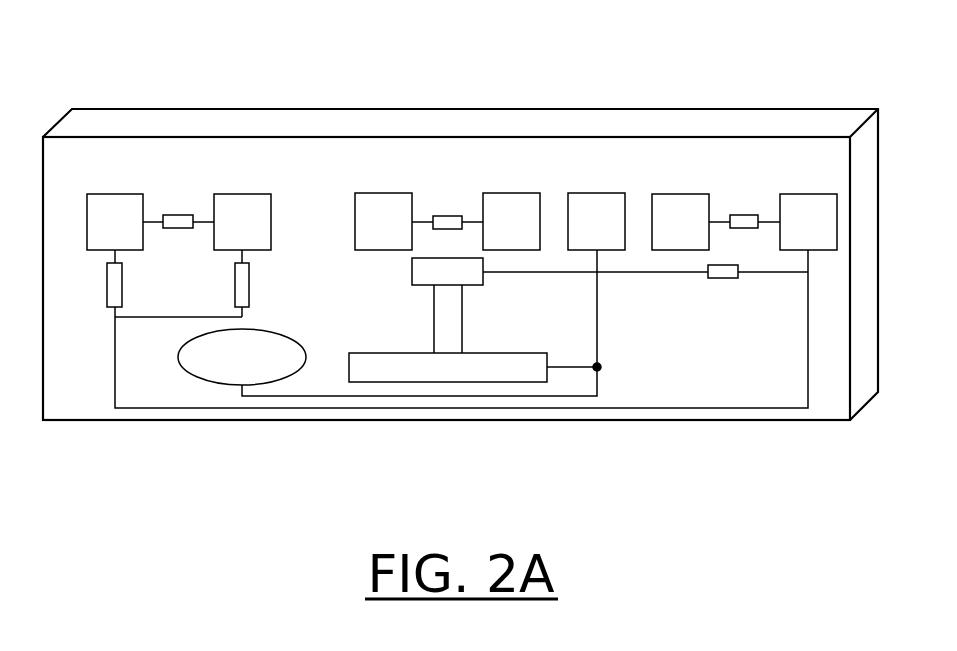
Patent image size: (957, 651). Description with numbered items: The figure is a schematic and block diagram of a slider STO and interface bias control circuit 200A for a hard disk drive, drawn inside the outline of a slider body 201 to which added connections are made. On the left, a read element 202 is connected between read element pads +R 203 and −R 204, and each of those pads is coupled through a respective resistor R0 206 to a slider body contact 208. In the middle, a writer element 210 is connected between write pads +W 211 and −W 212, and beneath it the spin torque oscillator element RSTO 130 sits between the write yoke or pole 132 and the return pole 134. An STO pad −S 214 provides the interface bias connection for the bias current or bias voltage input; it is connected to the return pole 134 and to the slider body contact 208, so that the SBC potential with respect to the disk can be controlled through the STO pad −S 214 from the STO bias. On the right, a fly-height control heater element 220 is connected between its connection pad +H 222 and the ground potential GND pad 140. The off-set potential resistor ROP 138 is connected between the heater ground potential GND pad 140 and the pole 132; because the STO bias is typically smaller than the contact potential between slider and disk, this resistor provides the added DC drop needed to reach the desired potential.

The slider STO and interface bias control circuit 200A is at (480, 27).
The slider body 201 is at (730, 123).
The read element 202 is at (178, 222).
The read element pad +R 203 is at (115, 222).
The read element pad −R 204 is at (242, 222).
The resistor R0 206 is at (153, 283).
The slider body contact 208 is at (273, 350).
The writer element 210 is at (450, 213).
The write pad +W 211 is at (383, 221).
The write pad −W 212 is at (511, 221).
The STO pad −S 214 is at (596, 221).
The fly-height control heater element 220 is at (748, 215).
The connection pad +H 222 is at (680, 222).
The ground potential GND pad 140 is at (808, 222).
The write yoke or pole 132 is at (447, 271).
The return pole 134 is at (448, 367).
The spin torque oscillator element RSTO 130 is at (447, 315).
The off-set potential resistor ROP 138 is at (723, 296).